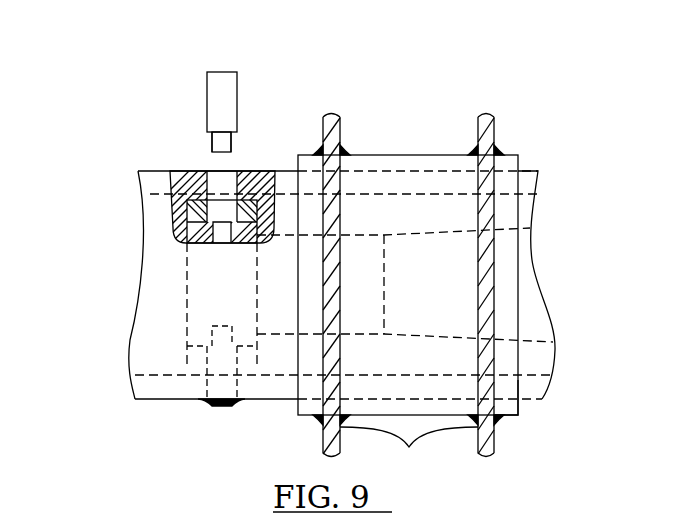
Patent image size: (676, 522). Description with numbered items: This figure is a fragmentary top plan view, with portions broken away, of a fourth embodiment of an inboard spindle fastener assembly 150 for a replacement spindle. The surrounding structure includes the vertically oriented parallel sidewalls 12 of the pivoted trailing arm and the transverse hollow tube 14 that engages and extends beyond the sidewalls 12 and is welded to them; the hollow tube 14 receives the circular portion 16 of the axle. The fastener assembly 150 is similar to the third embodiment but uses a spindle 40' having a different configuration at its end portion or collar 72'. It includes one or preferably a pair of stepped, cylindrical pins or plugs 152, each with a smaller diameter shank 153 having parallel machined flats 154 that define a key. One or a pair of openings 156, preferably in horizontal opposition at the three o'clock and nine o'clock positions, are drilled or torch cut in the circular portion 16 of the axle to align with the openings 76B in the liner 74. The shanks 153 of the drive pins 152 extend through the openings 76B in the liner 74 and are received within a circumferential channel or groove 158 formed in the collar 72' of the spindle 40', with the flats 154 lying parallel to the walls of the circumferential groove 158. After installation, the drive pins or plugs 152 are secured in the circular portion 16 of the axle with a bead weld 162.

The inboard spindle fastener assembly 150 is at (546, 116).
The transverse hollow tube 14 is at (402, 160).
The parallel sidewalls 12 is at (408, 297).
The circular portion 16 is at (533, 405).
The spindle 40' is at (424, 285).
The stepped cylindrical pins or plugs 152 is at (216, 100).
The shank 153 is at (224, 140).
The machined flats 154 is at (212, 146).
The opening 156 is at (213, 182).
The opening 76B is at (216, 210).
The liner 74 is at (187, 216).
The collar 72' is at (311, 279).
The circumferential channel or groove 158 is at (220, 237).
The bead weld 162 is at (200, 402).